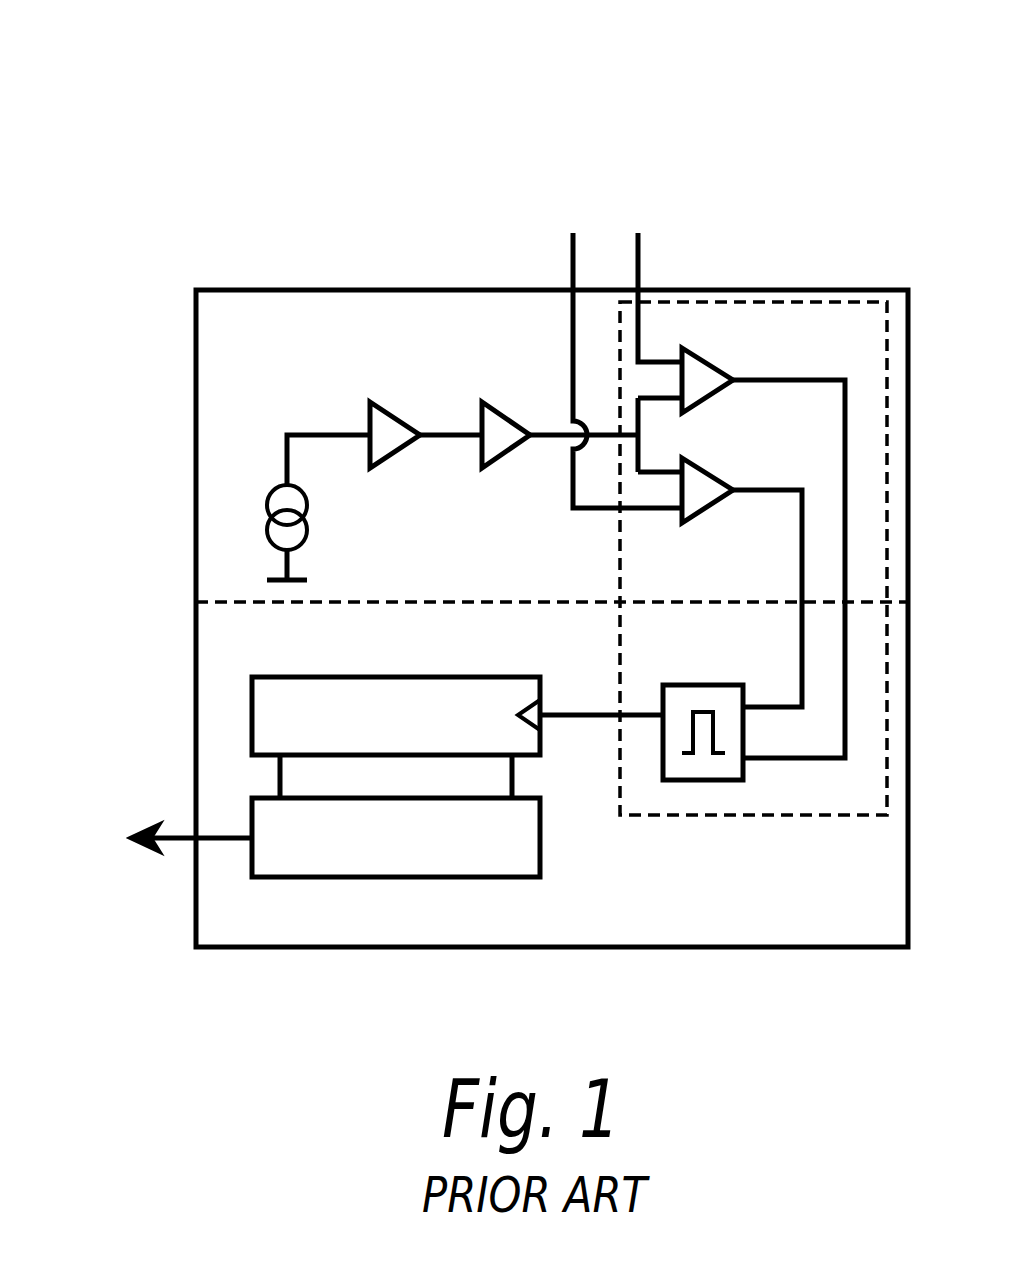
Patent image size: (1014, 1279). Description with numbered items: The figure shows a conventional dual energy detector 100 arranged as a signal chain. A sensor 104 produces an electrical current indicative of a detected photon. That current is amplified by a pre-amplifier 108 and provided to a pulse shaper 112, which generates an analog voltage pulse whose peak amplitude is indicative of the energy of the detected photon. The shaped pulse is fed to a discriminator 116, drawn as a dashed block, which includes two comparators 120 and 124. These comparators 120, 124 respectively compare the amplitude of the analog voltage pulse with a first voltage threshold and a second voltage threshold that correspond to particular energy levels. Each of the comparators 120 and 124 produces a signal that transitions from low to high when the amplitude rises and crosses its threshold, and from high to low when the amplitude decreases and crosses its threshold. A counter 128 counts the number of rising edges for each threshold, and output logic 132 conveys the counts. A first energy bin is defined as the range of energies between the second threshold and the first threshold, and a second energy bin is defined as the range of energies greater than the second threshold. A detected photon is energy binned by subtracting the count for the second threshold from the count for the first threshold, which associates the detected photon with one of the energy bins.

The dual energy detector 100 is at (148, 125).
The sensor 104 is at (268, 517).
The pre-amplifier 108 is at (368, 412).
The pulse shaper 112 is at (482, 415).
The discriminator 116 is at (822, 817).
The comparator 120 is at (705, 362).
The comparator 124 is at (705, 473).
The counter 128 is at (390, 675).
The output logic 132 is at (412, 878).